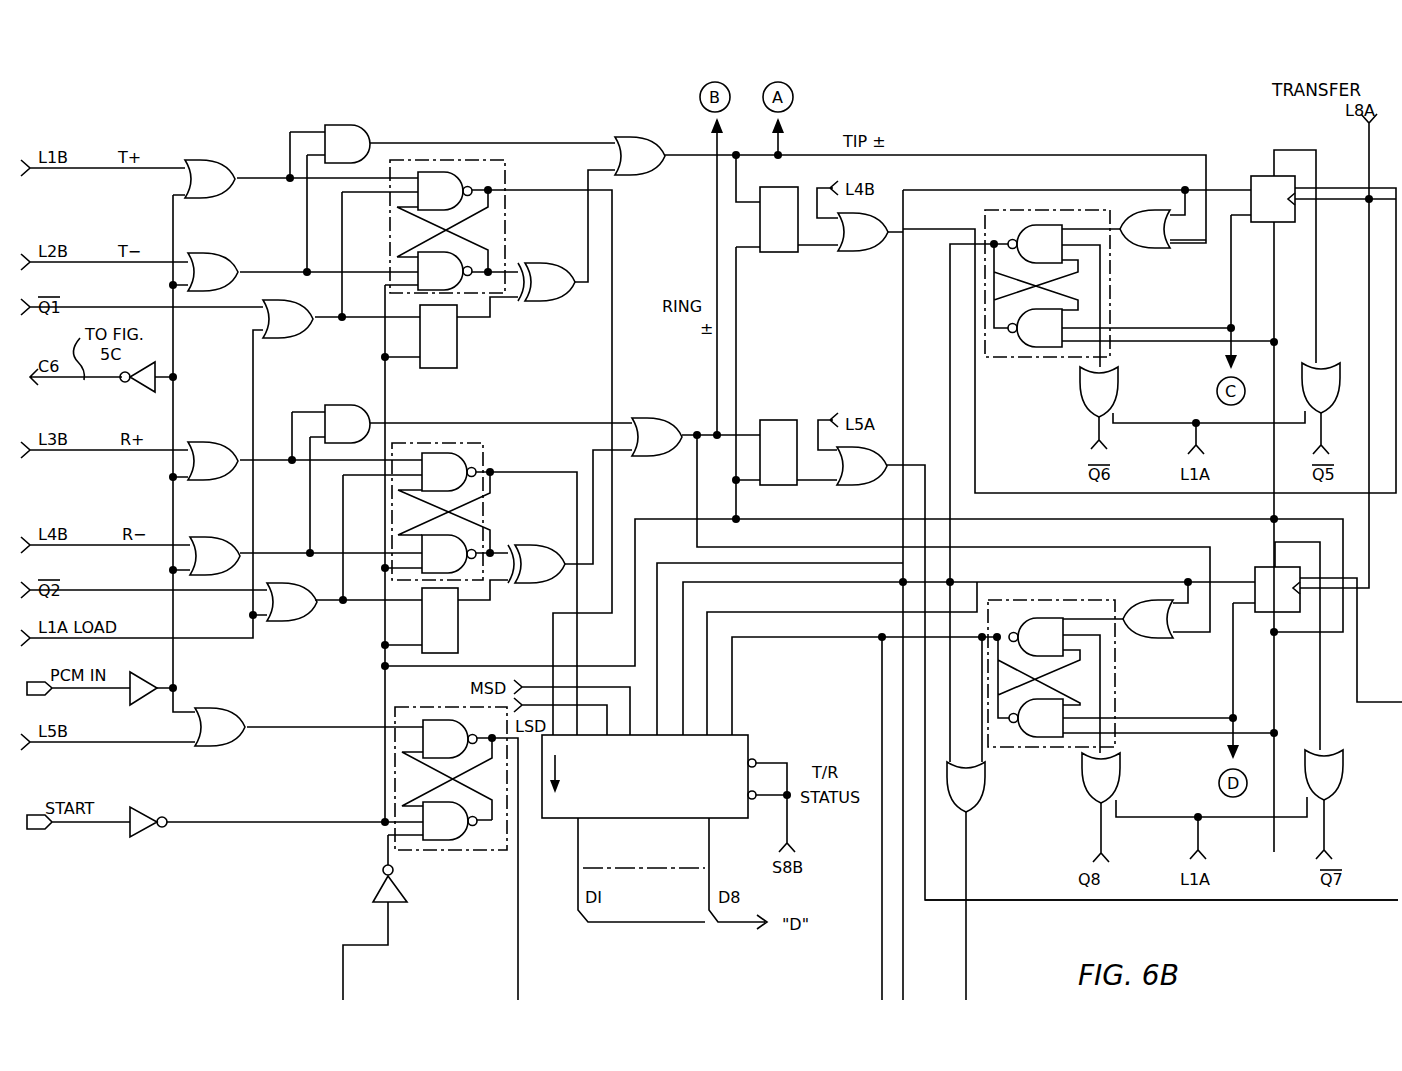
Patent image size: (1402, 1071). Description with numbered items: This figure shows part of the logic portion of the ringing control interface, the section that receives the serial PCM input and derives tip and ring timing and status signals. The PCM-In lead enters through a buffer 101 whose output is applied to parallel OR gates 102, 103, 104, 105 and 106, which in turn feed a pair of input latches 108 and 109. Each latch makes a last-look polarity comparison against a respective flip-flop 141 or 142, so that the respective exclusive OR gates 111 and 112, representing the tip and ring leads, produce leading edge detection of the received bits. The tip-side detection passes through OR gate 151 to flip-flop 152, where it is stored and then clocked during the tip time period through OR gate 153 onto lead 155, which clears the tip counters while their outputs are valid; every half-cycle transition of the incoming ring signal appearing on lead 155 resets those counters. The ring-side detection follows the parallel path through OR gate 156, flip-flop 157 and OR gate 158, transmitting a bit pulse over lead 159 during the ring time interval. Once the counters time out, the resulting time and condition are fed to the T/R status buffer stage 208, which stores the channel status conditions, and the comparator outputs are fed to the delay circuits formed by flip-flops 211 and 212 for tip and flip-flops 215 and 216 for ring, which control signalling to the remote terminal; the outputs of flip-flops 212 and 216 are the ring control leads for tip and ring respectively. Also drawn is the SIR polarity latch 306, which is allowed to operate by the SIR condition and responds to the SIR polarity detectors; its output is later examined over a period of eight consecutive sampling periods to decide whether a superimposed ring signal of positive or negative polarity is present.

The buffer 101 is at (140, 705).
The OR gate 102 is at (212, 160).
The OR gate 103 is at (214, 253).
The OR gate 104 is at (205, 442).
The OR gate 105 is at (213, 537).
The OR gate 106 is at (212, 705).
The input latch 108 is at (453, 226).
The input latch 109 is at (483, 515).
The exclusive OR gate 111 is at (550, 300).
The exclusive OR gate 112 is at (543, 583).
The flip-flop 141 is at (457, 355).
The flip-flop 142 is at (458, 640).
The OR gate 151 is at (641, 173).
The flip-flop 152 is at (780, 252).
The OR gate 153 is at (848, 250).
The lead 155 is at (985, 492).
The OR gate 156 is at (640, 418).
The flip-flop 157 is at (780, 420).
The OR gate 158 is at (840, 482).
The lead 159 is at (1248, 900).
The T/R status buffer stage 208 is at (645, 776).
The flip-flop 211 is at (1258, 174).
The flip-flop 212 is at (1110, 265).
The flip-flop 215 is at (1258, 566).
The flip-flop 216 is at (1115, 685).
The SIR polarity latch 306 is at (500, 850).